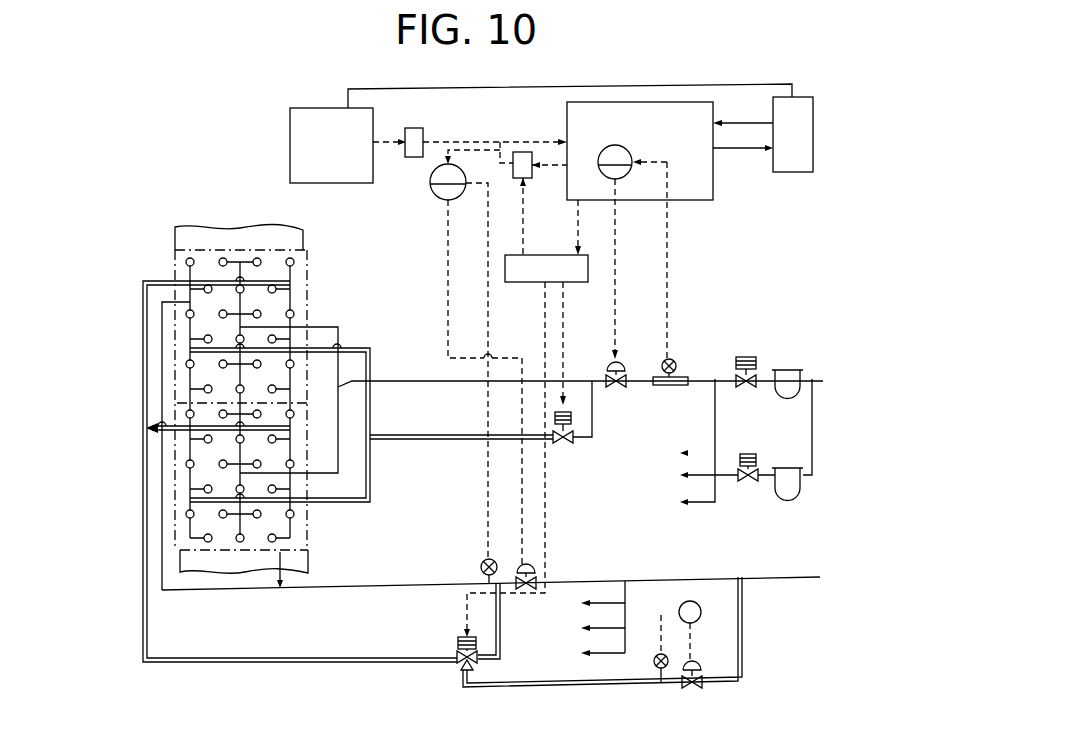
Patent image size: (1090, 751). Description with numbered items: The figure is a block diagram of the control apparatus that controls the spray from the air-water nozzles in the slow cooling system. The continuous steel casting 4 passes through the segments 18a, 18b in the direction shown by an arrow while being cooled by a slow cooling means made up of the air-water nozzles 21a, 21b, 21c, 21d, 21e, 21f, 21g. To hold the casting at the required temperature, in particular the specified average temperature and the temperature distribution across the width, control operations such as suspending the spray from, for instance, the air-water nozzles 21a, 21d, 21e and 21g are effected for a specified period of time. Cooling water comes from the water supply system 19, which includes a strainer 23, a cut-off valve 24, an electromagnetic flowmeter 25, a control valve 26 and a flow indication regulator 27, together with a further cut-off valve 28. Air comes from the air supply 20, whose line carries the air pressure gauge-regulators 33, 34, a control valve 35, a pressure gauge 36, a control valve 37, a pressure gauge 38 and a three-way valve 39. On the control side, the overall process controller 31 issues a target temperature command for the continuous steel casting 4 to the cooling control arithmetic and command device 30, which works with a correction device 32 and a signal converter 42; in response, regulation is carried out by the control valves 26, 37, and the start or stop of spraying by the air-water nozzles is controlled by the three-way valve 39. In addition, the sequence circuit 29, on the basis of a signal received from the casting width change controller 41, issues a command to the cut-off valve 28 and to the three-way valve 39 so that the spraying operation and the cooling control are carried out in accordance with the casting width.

The continuous steel casting 4 is at (292, 237).
The segment 18a is at (257, 297).
The segment 18b is at (306, 530).
The water supply system 19 is at (812, 370).
The air supply 20 is at (752, 579).
The air-water nozzle 21a is at (190, 258).
The air-water nozzle 21b is at (222, 258).
The air-water nozzle 21c is at (258, 258).
The air-water nozzle 21d is at (290, 258).
The air-water nozzle 21e is at (212, 281).
The air-water nozzle 21f is at (244, 289).
The air-water nozzle 21g is at (285, 284).
The strainer 23 is at (788, 370).
The cut-off valve 24 is at (746, 357).
The electromagnetic flowmeter 25 is at (676, 358).
The control valve 26 is at (616, 362).
The flow indication regulator 27 is at (620, 146).
The cut-off valve 28 is at (565, 444).
The sequence circuit 29 is at (572, 283).
The cooling control arithmetic and command device 30 is at (696, 200).
The overall process controller 31 is at (790, 172).
The correction device 32 is at (530, 178).
The air pressure gauge-regulator 33 is at (430, 191).
The air pressure gauge-regulator 34 is at (690, 601).
The control valve 35 is at (699, 658).
The pressure gauge 36 is at (658, 653).
The control valve 37 is at (537, 569).
The pressure gauge 38 is at (481, 567).
The three-way valve 39 is at (458, 641).
The casting width change controller 41 is at (290, 143).
The signal converter 42 is at (422, 137).